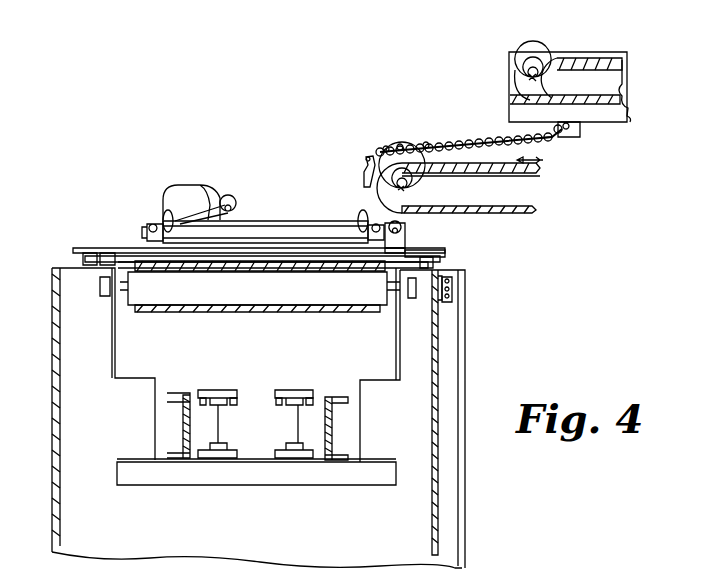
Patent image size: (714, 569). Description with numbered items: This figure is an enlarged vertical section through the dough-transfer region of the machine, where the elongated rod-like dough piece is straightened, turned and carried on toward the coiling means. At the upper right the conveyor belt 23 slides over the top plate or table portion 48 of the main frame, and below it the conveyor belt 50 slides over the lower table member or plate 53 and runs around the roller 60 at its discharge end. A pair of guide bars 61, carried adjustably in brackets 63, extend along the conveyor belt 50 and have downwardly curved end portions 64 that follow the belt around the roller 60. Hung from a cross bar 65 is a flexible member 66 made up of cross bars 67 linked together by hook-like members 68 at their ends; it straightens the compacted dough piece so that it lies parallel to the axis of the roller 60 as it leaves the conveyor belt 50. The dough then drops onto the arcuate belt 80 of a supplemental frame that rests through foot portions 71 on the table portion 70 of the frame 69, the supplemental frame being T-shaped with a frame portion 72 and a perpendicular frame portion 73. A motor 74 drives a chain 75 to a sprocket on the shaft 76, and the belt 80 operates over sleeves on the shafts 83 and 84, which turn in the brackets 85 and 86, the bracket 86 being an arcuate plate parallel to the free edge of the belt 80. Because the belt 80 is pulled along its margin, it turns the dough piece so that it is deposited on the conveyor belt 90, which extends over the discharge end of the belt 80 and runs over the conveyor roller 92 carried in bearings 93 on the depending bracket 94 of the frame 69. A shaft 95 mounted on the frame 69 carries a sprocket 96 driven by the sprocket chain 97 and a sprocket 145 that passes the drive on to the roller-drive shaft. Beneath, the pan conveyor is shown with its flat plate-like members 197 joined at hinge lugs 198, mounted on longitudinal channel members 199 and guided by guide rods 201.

The conveyor belt 23 is at (548, 55).
The top plate or table portion 48 is at (627, 93).
The conveyor belt 50 is at (532, 213).
The lower table member or plate 53 is at (530, 172).
The roller 60 is at (426, 188).
The guide bars 61 is at (468, 173).
The brackets 63 is at (462, 144).
The downwardly curved end portions 64 is at (368, 178).
The cross bar 65 is at (585, 132).
The flexible member 66 is at (550, 140).
The cross bars 67 is at (426, 146).
The hook-like members 68 is at (400, 148).
The frame 69 is at (468, 348).
The table portion 70 is at (115, 258).
The foot portions 71 is at (85, 259).
The frame portion 72 is at (80, 248).
The frame portion 73 is at (412, 262).
The motor 74 is at (186, 185).
The chain 75 is at (228, 203).
The shaft 76 is at (150, 272).
The arcuate belt 80 is at (265, 232).
The shaft 83 is at (405, 232).
The shaft 84 is at (405, 242).
The bracket 85 is at (380, 230).
The bracket 86 is at (160, 262).
The conveyor belt 90 is at (325, 270).
The conveyor roller 92 is at (207, 300).
The bearings 93 is at (100, 296).
The depending bracket 94 is at (110, 320).
The shaft 95 is at (440, 272).
The sprocket 96 is at (455, 302).
The sprocket chain 97 is at (438, 490).
The sprocket 145 is at (452, 280).
The flat plate-like members 197 is at (215, 390).
The hinge lugs 198 is at (300, 443).
The longitudinal channel members 199 is at (185, 410).
The guide rods 201 is at (198, 395).